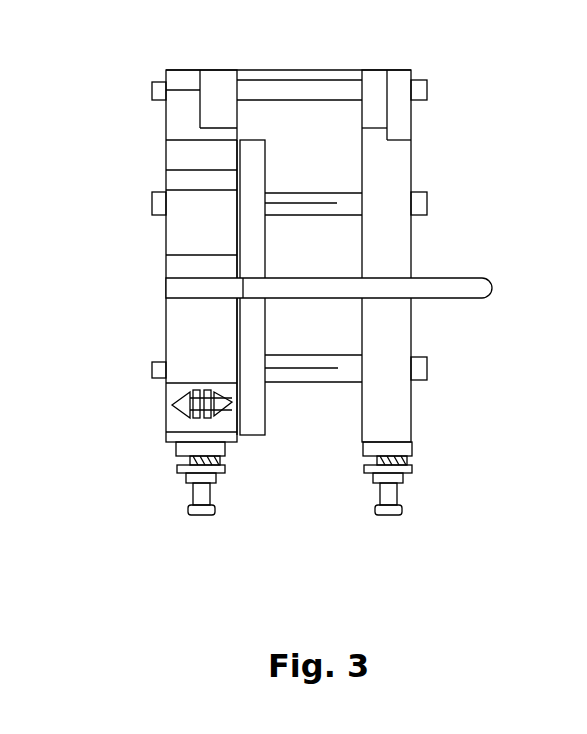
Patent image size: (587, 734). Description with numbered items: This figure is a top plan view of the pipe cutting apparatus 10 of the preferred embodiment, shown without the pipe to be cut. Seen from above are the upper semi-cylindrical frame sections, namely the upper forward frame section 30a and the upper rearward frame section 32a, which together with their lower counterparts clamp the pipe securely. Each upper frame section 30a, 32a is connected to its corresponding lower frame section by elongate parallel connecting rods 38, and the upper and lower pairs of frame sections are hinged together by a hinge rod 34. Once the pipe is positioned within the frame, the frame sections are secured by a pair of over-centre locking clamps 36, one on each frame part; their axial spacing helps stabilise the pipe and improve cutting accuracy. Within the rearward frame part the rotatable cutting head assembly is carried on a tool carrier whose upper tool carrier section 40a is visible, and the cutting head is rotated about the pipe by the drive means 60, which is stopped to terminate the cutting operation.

The pipe cutting apparatus 10 is at (110, 458).
The upper forward frame section 30a is at (395, 387).
The upper rearward frame section 32a is at (198, 223).
The hinge rod 34 is at (250, 92).
The over-centre locking clamps 36 is at (230, 460).
The connecting rods 38 is at (318, 215).
The upper tool carrier section 40a is at (250, 165).
The drive means 60 is at (172, 407).